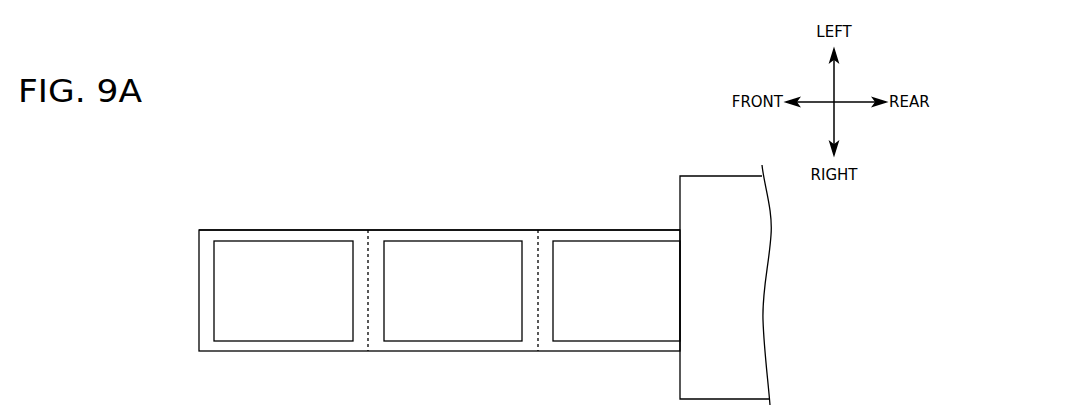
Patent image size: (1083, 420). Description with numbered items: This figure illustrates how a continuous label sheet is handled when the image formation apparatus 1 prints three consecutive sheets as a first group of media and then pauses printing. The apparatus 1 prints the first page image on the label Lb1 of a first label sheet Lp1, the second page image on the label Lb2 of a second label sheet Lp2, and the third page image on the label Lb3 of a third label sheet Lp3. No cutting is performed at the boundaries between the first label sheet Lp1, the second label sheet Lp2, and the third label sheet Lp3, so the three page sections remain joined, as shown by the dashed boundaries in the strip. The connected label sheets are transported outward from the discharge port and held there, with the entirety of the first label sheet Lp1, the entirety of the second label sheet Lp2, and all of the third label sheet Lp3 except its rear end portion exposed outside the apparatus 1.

The image formation apparatus 1 is at (722, 176).
The first label sheet Lp1 is at (246, 229).
The label Lb1 is at (283, 240).
The second label sheet Lp2 is at (417, 229).
The label Lb2 is at (458, 240).
The third label sheet Lp3 is at (597, 229).
The label Lb3 is at (636, 240).